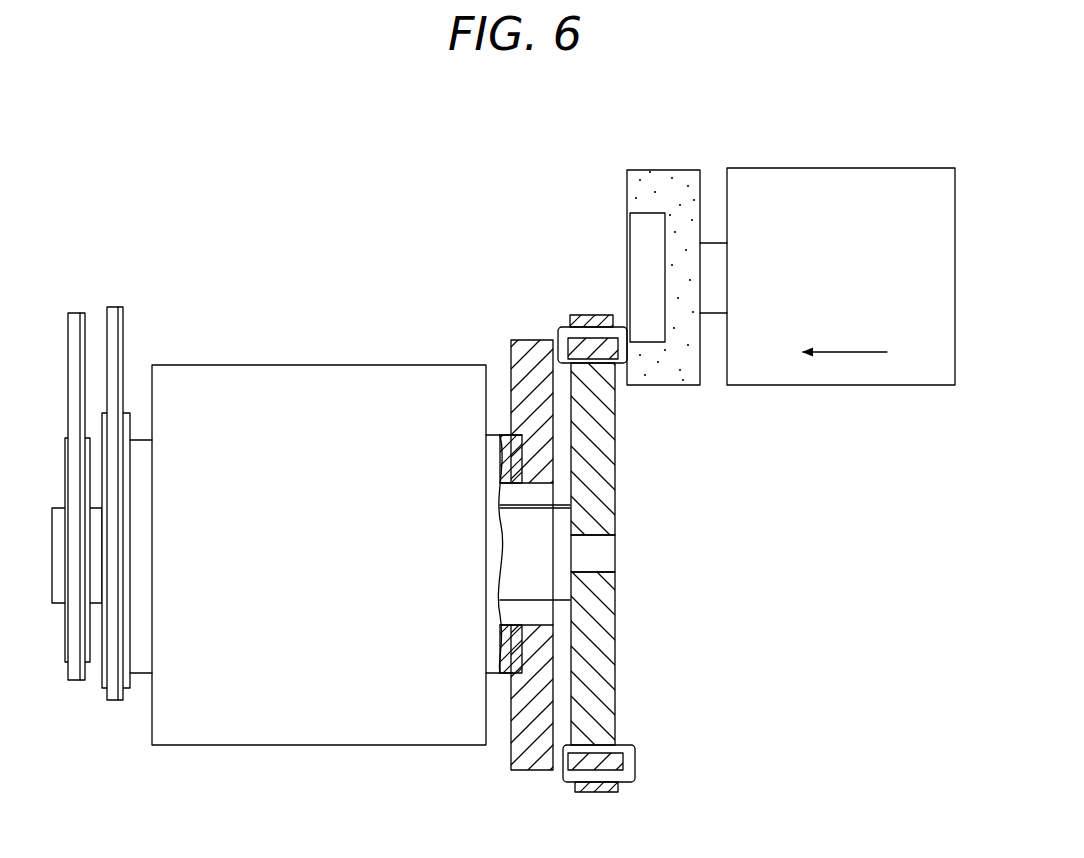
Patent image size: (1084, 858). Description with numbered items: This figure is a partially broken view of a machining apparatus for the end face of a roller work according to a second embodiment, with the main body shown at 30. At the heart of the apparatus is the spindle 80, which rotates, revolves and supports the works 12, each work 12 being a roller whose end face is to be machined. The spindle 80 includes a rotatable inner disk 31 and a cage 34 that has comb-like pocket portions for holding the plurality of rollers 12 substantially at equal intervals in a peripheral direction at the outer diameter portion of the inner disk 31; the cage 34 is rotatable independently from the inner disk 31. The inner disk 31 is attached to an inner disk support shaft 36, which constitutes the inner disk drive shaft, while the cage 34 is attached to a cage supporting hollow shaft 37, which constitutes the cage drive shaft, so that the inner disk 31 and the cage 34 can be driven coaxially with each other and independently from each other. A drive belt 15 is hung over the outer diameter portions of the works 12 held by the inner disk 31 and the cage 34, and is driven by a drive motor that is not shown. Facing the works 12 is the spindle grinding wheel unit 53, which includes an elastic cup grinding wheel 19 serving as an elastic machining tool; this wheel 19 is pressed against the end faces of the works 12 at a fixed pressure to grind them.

The motor 30 is at (335, 328).
The spindle 80 is at (560, 566).
The cage 34 is at (527, 766).
The inner disk 31 is at (608, 635).
The inner disk support shaft 36 is at (605, 550).
The cage supporting hollow shaft 37 is at (515, 659).
The work 12 is at (636, 765).
The drive belt 15 is at (600, 790).
The elastic cup grinding wheel 19 is at (633, 185).
The spindle grinding wheel unit 53 is at (810, 168).